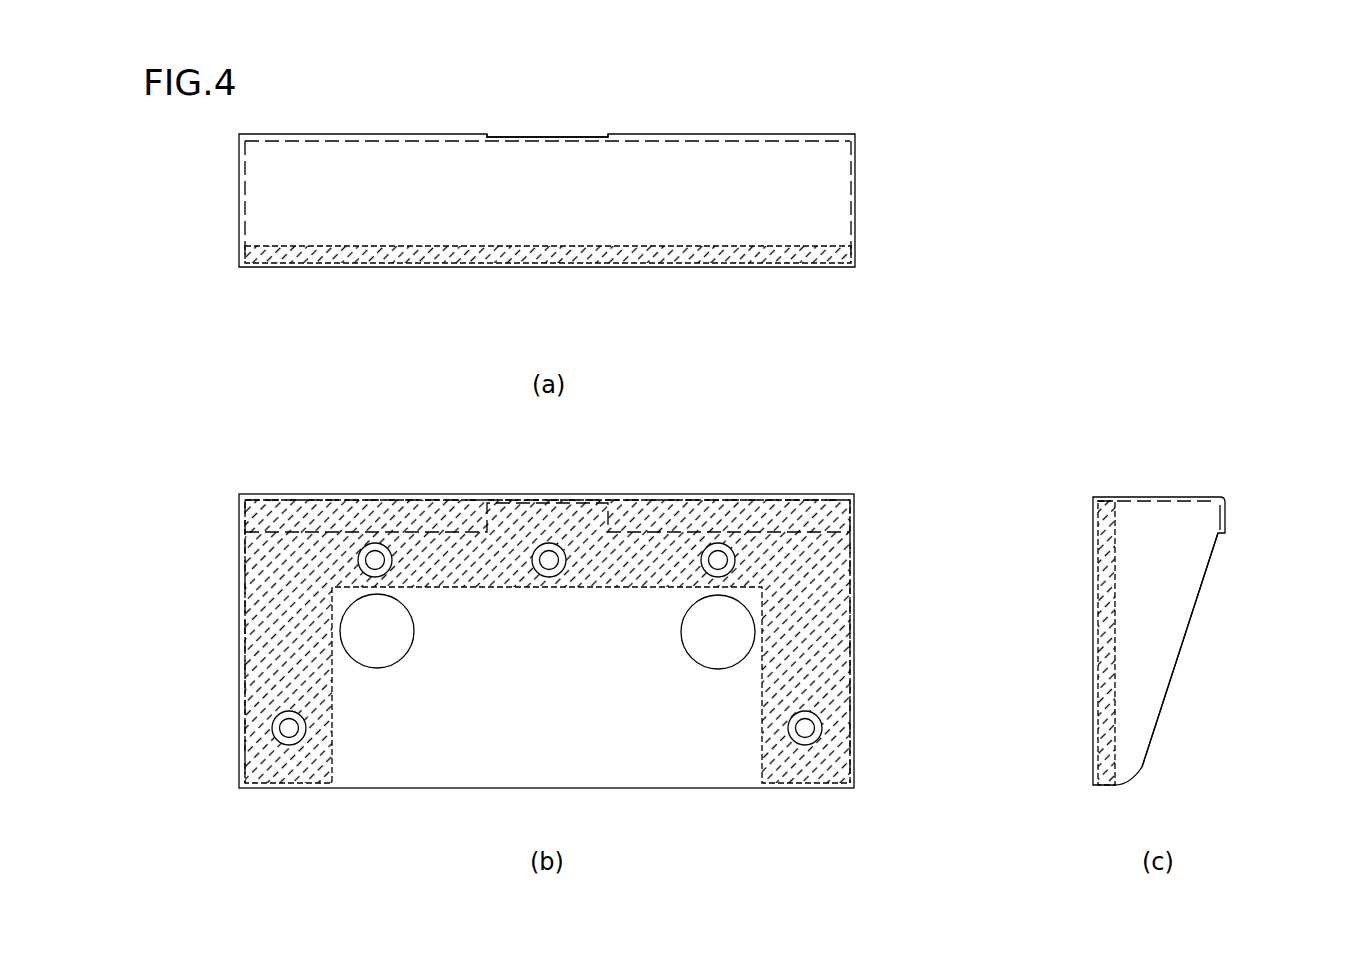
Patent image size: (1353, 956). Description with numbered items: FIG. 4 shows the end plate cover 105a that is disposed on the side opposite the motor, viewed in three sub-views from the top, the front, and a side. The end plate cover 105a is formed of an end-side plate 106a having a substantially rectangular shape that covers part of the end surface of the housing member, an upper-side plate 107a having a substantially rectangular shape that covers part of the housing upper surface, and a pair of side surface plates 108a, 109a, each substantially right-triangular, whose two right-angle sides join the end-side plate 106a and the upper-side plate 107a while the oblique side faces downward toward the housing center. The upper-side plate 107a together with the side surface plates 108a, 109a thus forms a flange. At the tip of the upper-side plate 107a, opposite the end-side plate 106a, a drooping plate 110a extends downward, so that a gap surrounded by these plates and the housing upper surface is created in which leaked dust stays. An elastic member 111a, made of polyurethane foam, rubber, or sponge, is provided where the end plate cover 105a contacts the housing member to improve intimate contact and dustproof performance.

The end plate cover 105a is at (855, 452).
The end-side plate 106a is at (678, 263).
The upper-side plate 107a is at (718, 165).
The side surface plate 108a is at (240, 190).
The side surface plate 109a is at (857, 190).
The drooping plate 110a is at (438, 133).
The elastic member 111a is at (492, 263).